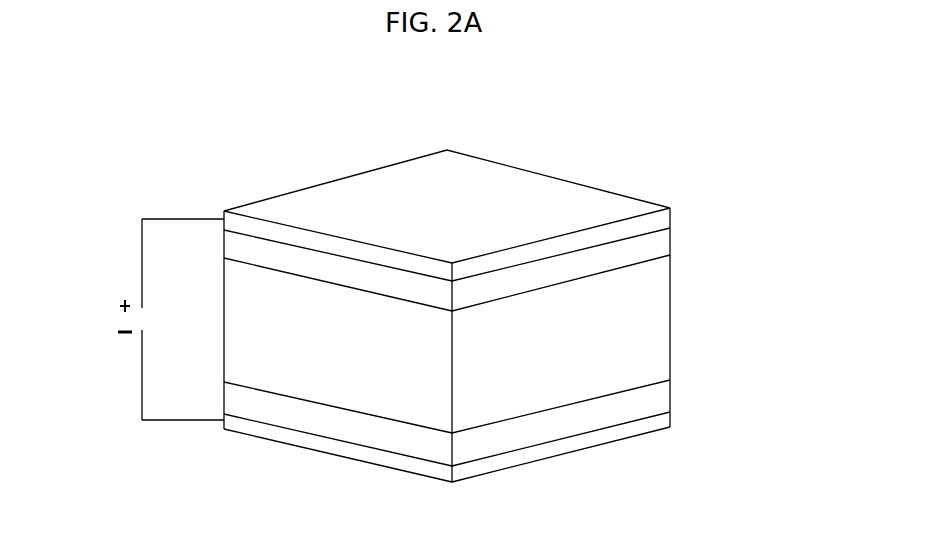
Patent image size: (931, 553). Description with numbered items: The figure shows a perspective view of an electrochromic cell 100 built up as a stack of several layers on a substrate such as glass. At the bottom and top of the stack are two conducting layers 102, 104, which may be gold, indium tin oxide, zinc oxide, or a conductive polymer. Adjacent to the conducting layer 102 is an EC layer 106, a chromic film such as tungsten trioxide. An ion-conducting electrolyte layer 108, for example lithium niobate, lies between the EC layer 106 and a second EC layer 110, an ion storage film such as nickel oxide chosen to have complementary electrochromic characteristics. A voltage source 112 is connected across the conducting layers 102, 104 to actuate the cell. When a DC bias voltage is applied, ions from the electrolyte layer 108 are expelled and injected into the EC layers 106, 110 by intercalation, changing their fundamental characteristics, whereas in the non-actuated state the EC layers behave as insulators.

The EC cell 100 is at (222, 143).
The conducting layer 102 is at (671, 418).
The conducting layer 104 is at (671, 218).
The EC layer 106 is at (671, 392).
The electrolyte layer 108 is at (671, 320).
The second EC layer 110 is at (671, 245).
The voltage source 112 is at (110, 319).